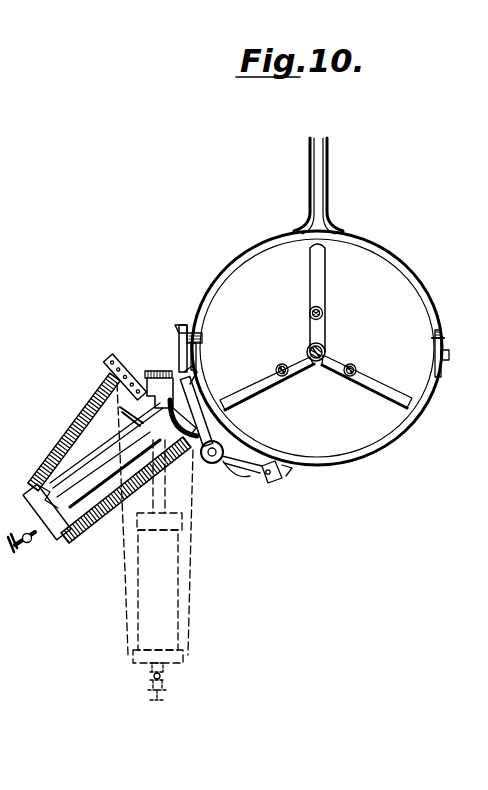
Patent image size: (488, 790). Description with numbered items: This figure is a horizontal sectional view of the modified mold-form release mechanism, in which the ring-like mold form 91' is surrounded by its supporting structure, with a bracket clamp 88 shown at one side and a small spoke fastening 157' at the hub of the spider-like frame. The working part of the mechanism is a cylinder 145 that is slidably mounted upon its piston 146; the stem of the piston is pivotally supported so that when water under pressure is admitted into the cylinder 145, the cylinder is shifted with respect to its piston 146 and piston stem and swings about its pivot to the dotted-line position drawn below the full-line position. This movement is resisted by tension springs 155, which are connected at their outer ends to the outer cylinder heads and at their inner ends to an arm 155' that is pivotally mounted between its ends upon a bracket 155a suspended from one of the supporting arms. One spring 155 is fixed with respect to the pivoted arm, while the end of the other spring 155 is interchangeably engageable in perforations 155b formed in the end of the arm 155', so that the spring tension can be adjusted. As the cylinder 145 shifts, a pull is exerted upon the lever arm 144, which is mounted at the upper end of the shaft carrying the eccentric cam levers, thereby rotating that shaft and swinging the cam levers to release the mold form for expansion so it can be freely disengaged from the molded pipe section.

The steering wheel rim 91' is at (332, 348).
The bracket clamp 88 is at (450, 357).
The spoke screw 157' is at (345, 313).
The lever arm 144 is at (201, 398).
The arm 155' is at (166, 329).
The bracket 155a is at (160, 372).
The perforations 155b is at (115, 349).
The tension springs 155 is at (138, 514).
The cylinder 145 is at (97, 526).
The piston 146 is at (50, 474).